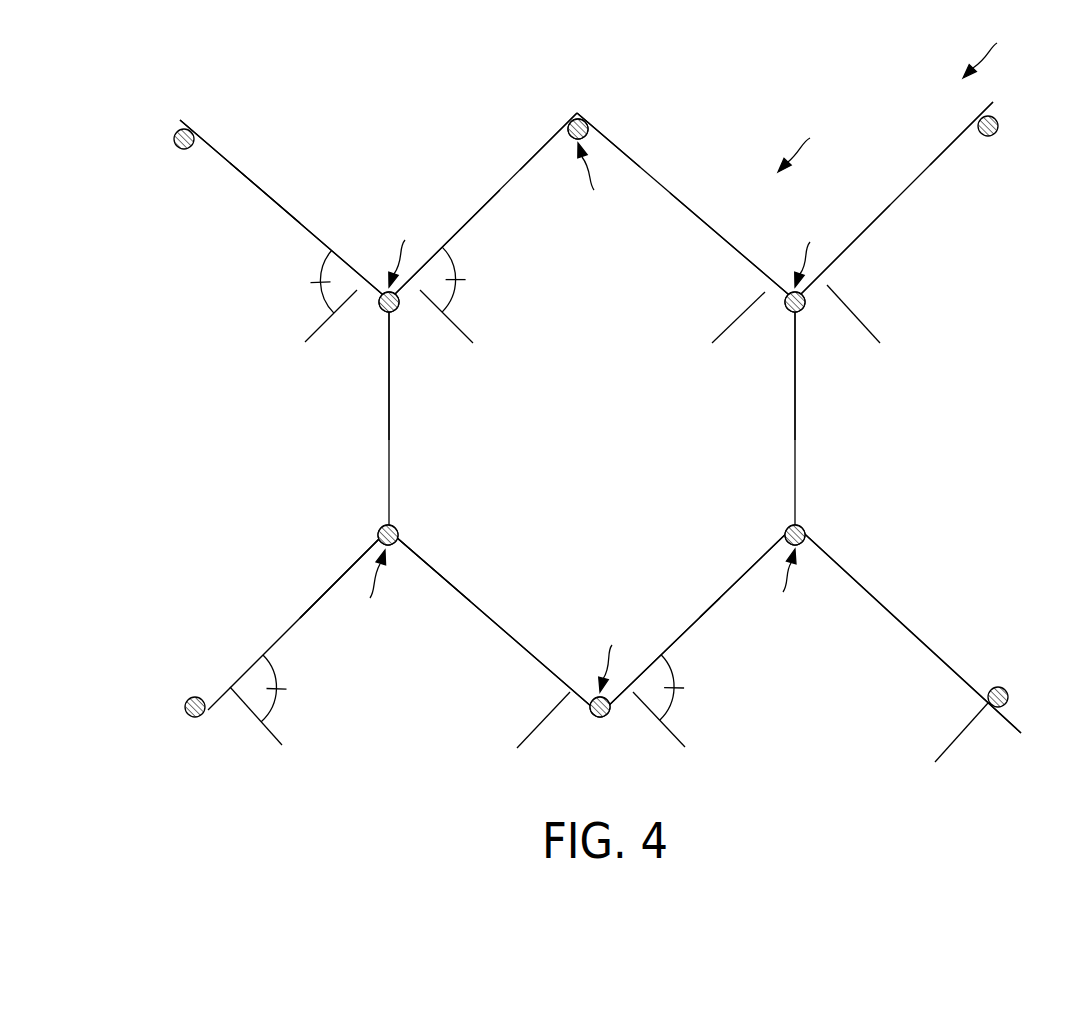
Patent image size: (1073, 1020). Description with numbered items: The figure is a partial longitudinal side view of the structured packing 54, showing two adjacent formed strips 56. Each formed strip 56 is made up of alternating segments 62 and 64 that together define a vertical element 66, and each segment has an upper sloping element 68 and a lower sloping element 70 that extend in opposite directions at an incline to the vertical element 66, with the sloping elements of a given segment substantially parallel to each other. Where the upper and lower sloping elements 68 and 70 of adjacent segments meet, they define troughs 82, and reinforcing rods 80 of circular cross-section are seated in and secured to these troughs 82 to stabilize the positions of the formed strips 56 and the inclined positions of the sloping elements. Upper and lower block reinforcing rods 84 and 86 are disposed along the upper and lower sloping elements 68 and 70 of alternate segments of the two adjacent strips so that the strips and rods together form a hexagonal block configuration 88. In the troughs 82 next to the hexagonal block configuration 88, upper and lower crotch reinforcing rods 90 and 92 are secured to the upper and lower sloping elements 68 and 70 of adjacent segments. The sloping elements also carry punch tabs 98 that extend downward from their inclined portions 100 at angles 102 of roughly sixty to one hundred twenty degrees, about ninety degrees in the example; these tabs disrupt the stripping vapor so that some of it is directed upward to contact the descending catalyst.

The structured packing 54 is at (998, 55).
The formed strip 56 is at (400, 476).
The alternating segment 62 is at (497, 194).
The alternating segment 64 is at (226, 158).
The vertical element 66 is at (400, 386).
The upper sloping element 68 is at (286, 212).
The lower sloping element 70 is at (349, 568).
The reinforcing rod 80 is at (175, 133).
The trough 82 is at (589, 417).
The upper block reinforcing rod 84 is at (571, 112).
The lower block reinforcing rod 86 is at (589, 716).
The hexagonal block configuration 88 is at (813, 148).
The upper crotch reinforcing rod 90 is at (403, 305).
The lower crotch reinforcing rod 92 is at (401, 536).
The punch tab 98 is at (308, 338).
The inclined portion 100 is at (250, 181).
The angle 102 is at (310, 290).